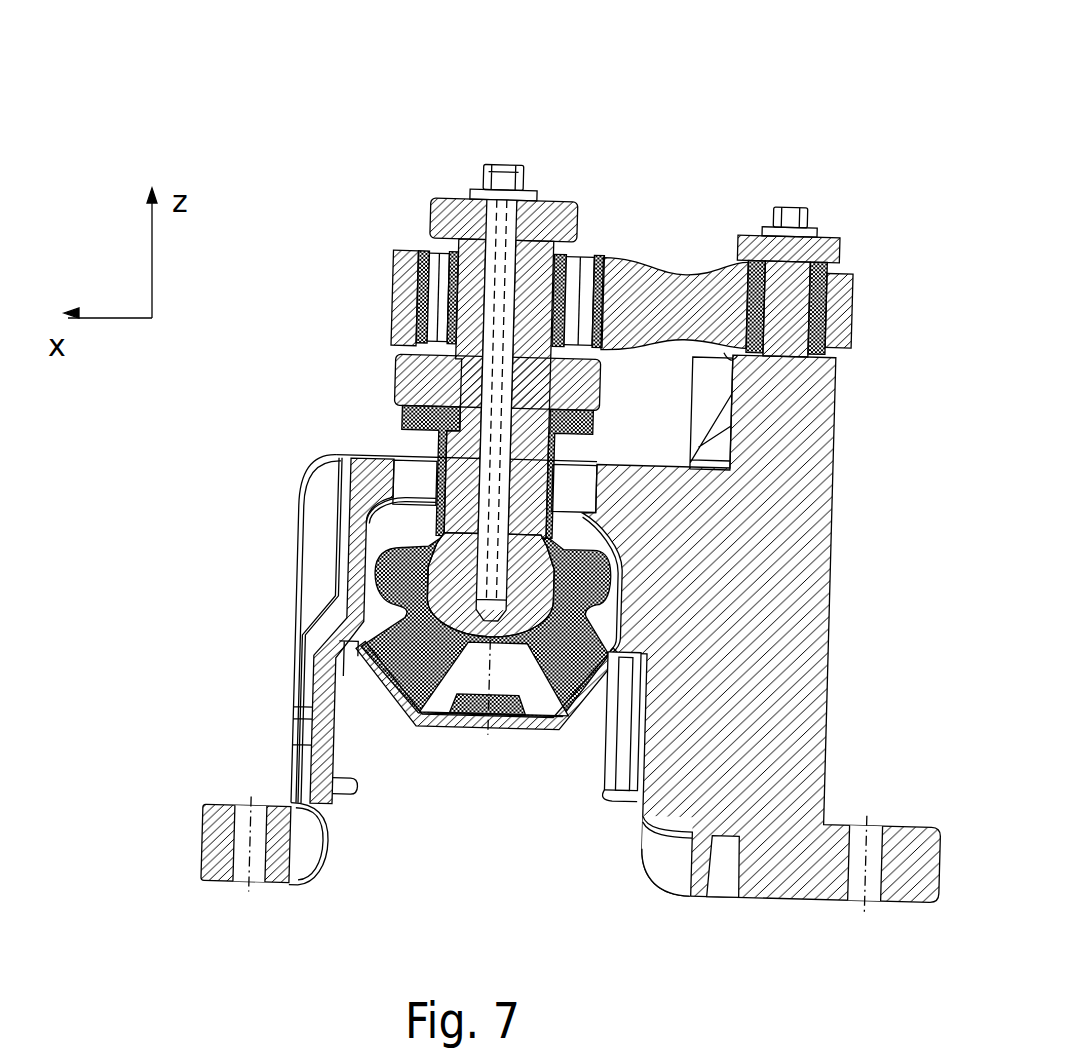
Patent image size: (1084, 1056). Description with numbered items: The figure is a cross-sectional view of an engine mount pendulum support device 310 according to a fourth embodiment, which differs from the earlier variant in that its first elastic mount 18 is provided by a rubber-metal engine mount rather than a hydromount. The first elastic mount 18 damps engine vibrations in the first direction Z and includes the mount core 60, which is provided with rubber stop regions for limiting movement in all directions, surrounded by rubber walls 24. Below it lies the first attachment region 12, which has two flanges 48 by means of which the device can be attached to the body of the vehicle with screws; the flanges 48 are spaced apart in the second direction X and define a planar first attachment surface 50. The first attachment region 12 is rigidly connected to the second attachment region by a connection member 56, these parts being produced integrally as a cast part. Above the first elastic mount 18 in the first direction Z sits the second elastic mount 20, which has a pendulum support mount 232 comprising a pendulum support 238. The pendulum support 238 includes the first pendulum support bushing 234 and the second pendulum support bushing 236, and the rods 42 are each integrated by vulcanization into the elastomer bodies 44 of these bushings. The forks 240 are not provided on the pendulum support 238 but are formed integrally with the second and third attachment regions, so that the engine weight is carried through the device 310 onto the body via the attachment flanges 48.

The engine mount pendulum support device 310 is at (463, 120).
The second elastic mount 20 is at (714, 132).
The pendulum support mount 232 is at (770, 200).
The forks 240 is at (812, 250).
The first pendulum support bushing 234 is at (847, 263).
The pendulum support 238 is at (675, 282).
The rods 42 is at (508, 212).
The second pendulum support bushing 236 is at (398, 227).
The elastomer bodies 44 is at (817, 330).
The mount core 60 is at (437, 568).
The first elastic mount 18 is at (283, 553).
The connection member 56 is at (785, 594).
The first attachment region 12 is at (248, 759).
The rubber walls 24 is at (580, 676).
The flanges 48 is at (210, 838).
The first attachment surface 50 is at (273, 880).